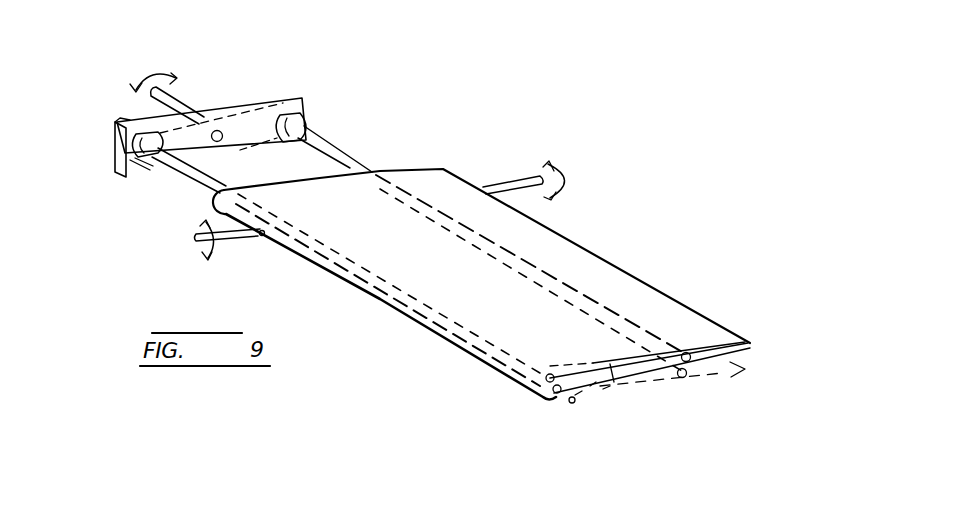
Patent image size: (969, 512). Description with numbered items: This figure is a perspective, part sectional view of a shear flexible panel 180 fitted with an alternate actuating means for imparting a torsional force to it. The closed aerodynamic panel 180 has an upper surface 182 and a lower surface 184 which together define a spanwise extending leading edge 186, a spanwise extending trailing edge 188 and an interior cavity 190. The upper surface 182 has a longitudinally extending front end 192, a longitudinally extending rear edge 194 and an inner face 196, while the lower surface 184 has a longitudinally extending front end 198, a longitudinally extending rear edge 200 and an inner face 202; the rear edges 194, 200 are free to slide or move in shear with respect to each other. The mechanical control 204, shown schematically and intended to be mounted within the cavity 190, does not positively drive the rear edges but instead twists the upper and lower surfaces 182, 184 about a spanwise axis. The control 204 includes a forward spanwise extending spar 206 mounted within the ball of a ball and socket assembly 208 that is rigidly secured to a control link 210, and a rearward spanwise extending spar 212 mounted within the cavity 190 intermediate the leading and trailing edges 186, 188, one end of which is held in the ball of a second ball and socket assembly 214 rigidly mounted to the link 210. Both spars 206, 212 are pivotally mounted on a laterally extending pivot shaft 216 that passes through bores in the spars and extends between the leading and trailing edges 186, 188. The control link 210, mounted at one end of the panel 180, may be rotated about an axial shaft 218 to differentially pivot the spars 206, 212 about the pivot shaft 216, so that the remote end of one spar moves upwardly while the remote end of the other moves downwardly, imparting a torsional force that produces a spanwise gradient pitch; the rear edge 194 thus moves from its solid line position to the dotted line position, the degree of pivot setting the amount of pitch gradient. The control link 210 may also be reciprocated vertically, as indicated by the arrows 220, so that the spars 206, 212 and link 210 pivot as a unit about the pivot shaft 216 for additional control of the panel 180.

The shear flexible panel 180 is at (647, 226).
The upper surface 182 is at (680, 312).
The lower surface 184 is at (606, 388).
The leading edge 186 is at (450, 353).
The trailing edge 188 is at (748, 344).
The interior cavity 190 is at (592, 384).
The front end of upper surface 192 is at (532, 382).
The rear edge of upper surface 194 is at (741, 345).
The inner face of upper surface 196 is at (614, 384).
The front end of lower surface 198 is at (571, 402).
The rear edge of lower surface 200 is at (748, 347).
The inner face of lower surface 202 is at (578, 392).
The mechanical control 204 is at (293, 66).
The forward spanwise extending spar 206 is at (193, 175).
The ball and socket assembly 208 is at (116, 153).
The control link 210 is at (282, 103).
The rearward spanwise extending spar 212 is at (350, 157).
The ball and socket assembly 214 is at (303, 122).
The pivot shaft 216 is at (262, 240).
The axial shaft 218 is at (222, 104).
The arrows 220 is at (216, 159).